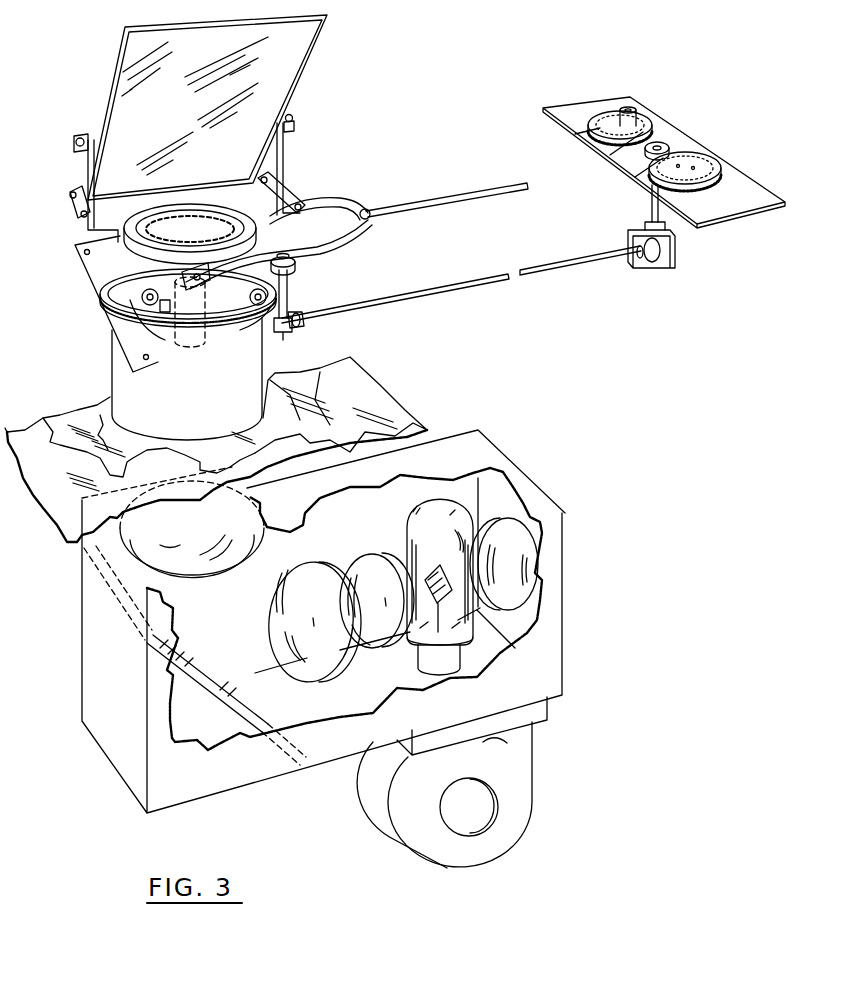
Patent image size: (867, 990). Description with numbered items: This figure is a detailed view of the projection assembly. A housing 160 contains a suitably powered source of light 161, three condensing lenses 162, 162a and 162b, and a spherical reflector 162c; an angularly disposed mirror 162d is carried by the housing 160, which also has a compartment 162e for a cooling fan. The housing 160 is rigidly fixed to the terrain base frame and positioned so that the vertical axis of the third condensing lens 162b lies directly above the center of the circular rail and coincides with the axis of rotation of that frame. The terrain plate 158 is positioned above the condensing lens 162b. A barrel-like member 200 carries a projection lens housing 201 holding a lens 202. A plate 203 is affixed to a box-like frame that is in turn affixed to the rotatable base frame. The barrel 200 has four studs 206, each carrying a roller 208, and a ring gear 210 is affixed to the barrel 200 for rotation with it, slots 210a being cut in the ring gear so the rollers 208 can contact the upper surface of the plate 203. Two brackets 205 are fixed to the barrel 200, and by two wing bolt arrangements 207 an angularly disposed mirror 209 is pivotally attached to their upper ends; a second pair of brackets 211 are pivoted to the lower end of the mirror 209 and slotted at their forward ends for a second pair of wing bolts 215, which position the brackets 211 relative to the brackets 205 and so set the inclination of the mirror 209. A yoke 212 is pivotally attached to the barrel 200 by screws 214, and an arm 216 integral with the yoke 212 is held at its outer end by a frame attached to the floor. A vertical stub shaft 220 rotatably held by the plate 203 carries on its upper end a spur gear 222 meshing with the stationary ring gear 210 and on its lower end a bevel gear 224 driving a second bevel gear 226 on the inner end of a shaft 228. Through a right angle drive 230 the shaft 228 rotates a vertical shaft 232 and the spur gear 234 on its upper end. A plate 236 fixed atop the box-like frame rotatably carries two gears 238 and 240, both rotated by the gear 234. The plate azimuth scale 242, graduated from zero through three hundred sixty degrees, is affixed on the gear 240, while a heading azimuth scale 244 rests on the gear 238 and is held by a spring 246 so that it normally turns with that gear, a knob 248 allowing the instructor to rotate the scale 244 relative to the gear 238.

The terrain plate 158 is at (374, 386).
The housing 160 is at (92, 673).
The source of light 161 is at (433, 507).
The condensing lens 162 is at (358, 562).
The condensing lens 162a is at (300, 570).
The third condensing lens 162b is at (200, 566).
The spherical reflector 162c is at (539, 564).
The angularly disposed mirror 162d is at (213, 697).
The compartment 162e is at (522, 784).
The barrel-like member 200 is at (116, 380).
The projection lens housing 201 is at (213, 230).
The lens 202 is at (188, 281).
The plate 203 is at (105, 311).
The brackets 205 is at (87, 178).
The studs 206 is at (163, 312).
The wing bolt arrangements 207 is at (80, 136).
The roller 208 is at (150, 290).
The angularly disposed mirror 209 is at (292, 63).
The ring gear 210 is at (110, 285).
The slots 210a is at (250, 323).
The brackets 211 is at (70, 200).
The yoke 212 is at (332, 240).
The screws 214 is at (245, 275).
The wing bolts 215 is at (80, 218).
The arm 216 is at (450, 201).
The vertical stub shaft 220 is at (290, 292).
The spur gear 222 is at (297, 266).
The bevel gear 224 is at (284, 325).
The second bevel gear 226 is at (304, 321).
The shaft 228 is at (456, 292).
The right angle drive 230 is at (672, 255).
The vertical shaft 232 is at (650, 207).
The spur gear 234 is at (664, 146).
The plate 236 is at (748, 203).
The gear 238 is at (588, 133).
The gear 240 is at (648, 173).
The plate azimuth scale 242 is at (712, 165).
The heading azimuth scale 244 is at (638, 122).
The spring 246 is at (622, 151).
The knob 248 is at (627, 107).